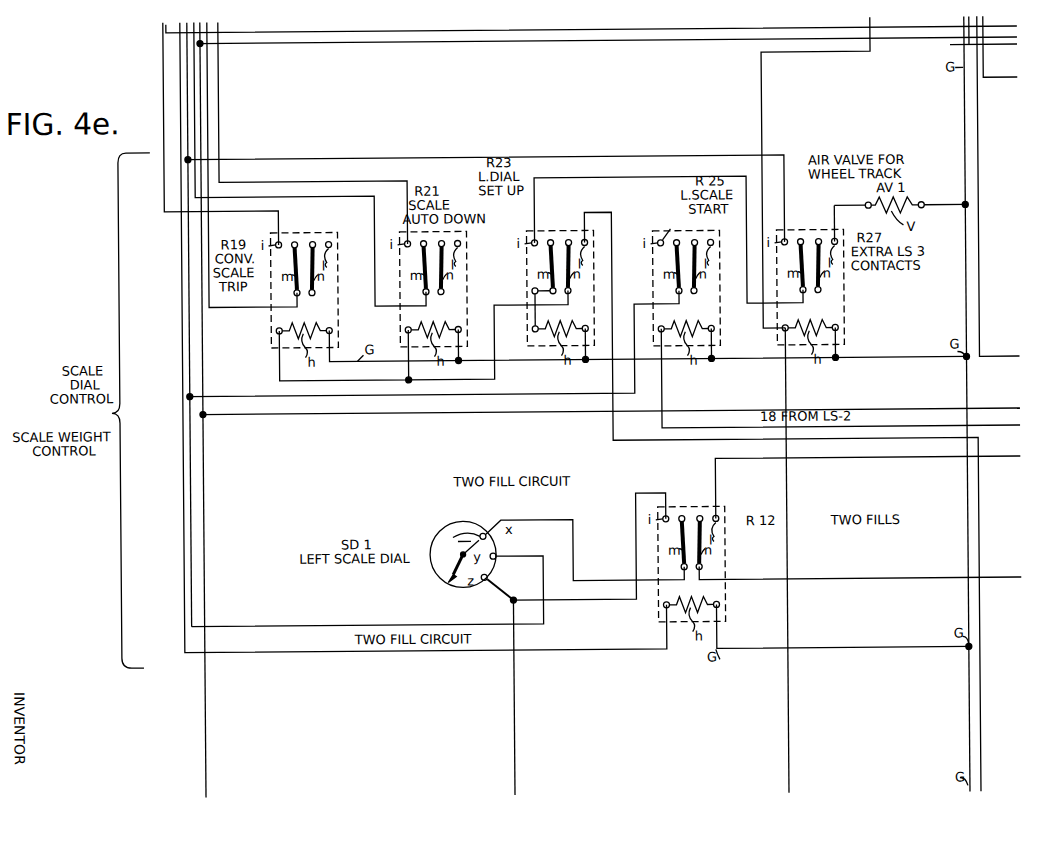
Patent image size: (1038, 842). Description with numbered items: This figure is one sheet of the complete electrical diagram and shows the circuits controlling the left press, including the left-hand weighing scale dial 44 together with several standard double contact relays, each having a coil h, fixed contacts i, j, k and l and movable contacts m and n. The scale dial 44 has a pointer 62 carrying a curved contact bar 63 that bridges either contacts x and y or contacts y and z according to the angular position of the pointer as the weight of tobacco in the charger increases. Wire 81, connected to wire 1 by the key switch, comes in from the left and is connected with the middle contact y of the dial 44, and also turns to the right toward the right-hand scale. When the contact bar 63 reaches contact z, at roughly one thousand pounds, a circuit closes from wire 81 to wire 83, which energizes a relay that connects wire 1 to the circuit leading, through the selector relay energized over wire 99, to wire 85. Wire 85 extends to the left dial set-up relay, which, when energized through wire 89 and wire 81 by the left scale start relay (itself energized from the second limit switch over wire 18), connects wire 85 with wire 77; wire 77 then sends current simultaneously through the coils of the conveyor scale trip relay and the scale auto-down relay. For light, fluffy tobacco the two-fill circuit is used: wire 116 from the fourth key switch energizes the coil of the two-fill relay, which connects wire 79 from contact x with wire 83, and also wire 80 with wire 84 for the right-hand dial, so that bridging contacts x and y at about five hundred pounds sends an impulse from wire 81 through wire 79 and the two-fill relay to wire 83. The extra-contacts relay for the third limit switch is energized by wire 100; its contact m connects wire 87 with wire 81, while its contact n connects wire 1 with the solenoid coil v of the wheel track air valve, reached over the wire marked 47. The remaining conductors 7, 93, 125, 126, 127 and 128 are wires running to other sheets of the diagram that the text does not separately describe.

The wire 1 is at (203, 68).
The conductor 7 is at (221, 52).
The wire 18 is at (662, 426).
The scale dial 44 is at (463, 548).
The conductor 47 is at (838, 216).
The pointer 62 is at (456, 540).
The curved contact bar 63 is at (466, 535).
The wire 77 is at (280, 376).
The wire 79 is at (503, 520).
The wire 80 is at (717, 581).
The wire 81 is at (190, 67).
The wire 83 is at (512, 782).
The wire 84 is at (715, 460).
The wire 85 is at (613, 227).
The wire 87 is at (538, 212).
The wire 89 is at (603, 270).
The conductor 93 is at (197, 90).
The wire 99 is at (169, 30).
The wire 100 is at (786, 782).
The wire 116 is at (183, 59).
The conductor 125 is at (210, 100).
The conductor 126 is at (998, 186).
The conductor 127 is at (166, 45).
The conductor 128 is at (1000, 46).